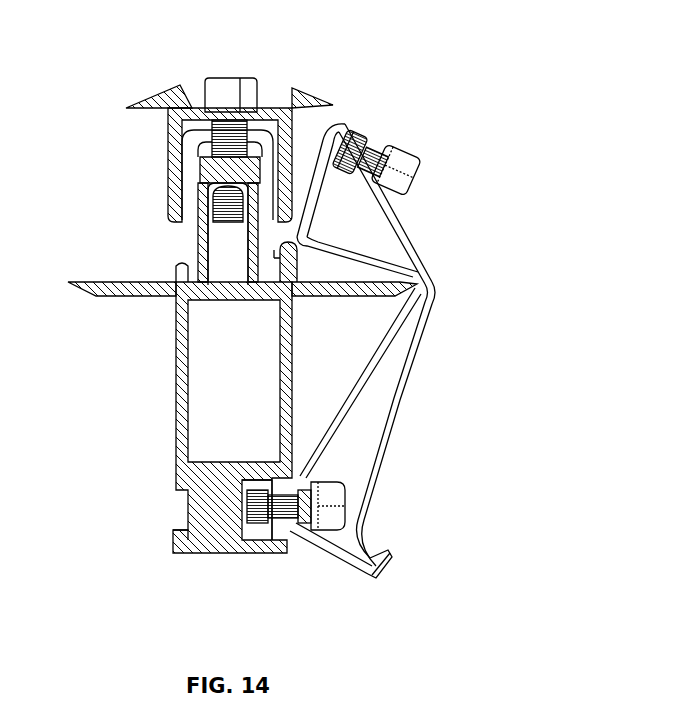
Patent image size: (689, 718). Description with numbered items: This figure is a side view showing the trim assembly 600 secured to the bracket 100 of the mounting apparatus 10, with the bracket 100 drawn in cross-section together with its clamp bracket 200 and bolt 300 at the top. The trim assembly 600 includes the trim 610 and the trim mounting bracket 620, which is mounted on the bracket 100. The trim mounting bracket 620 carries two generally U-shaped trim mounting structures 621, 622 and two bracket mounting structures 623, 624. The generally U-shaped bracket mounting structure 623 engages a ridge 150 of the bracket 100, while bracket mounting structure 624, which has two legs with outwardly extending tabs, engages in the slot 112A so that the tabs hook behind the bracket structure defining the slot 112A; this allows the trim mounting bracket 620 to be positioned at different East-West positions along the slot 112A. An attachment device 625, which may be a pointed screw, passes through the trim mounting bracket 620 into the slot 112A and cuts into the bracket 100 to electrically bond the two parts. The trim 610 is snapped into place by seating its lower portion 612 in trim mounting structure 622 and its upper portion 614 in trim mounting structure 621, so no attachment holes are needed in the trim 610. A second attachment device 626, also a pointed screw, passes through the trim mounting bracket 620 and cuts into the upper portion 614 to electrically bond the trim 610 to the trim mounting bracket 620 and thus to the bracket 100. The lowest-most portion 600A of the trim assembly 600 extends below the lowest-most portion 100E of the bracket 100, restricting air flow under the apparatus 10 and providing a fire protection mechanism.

The apparatus 10 is at (165, 331).
The bracket 100 is at (176, 418).
The lowest-most portion of the bracket 100E is at (194, 556).
The slot 112A is at (250, 535).
The ridge 150 is at (306, 272).
The clamp bracket 200 is at (288, 110).
The bolt 300 is at (237, 76).
The trim assembly 600 is at (424, 309).
The lowest-most portion of the trim assembly 600A is at (398, 574).
The trim 610 is at (406, 374).
The lower portion of the trim 612 is at (368, 535).
The upper portion of the trim 614 is at (422, 118).
The trim mounting bracket 620 is at (353, 410).
The trim mounting structure 621 is at (356, 133).
The trim mounting structure 622 is at (390, 558).
The bracket mounting structure 623 is at (350, 243).
The bracket mounting structure 624 is at (284, 528).
The attachment device 625 is at (328, 483).
The attachment device 626 is at (410, 160).